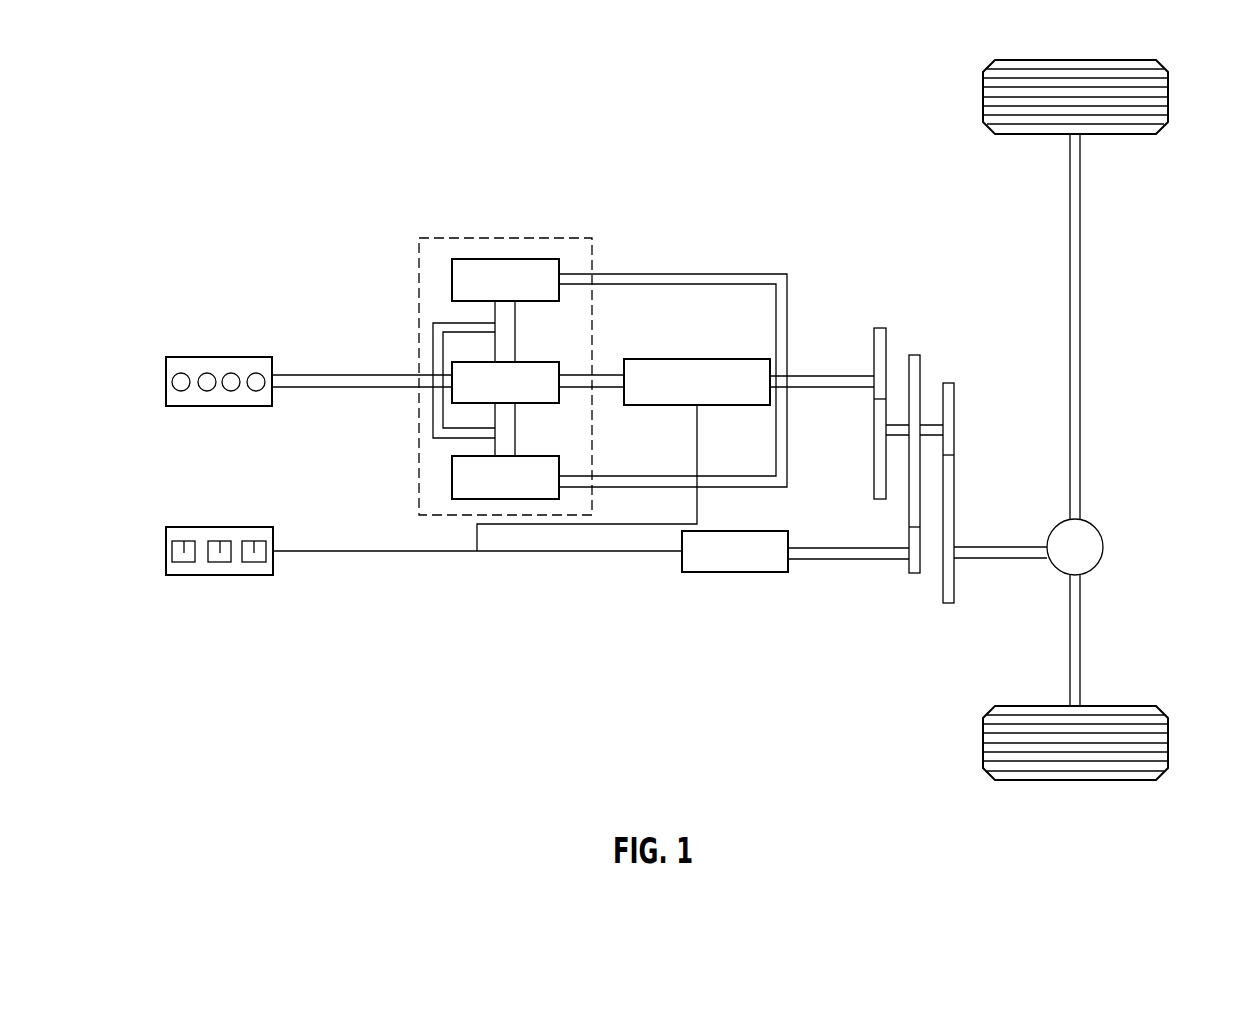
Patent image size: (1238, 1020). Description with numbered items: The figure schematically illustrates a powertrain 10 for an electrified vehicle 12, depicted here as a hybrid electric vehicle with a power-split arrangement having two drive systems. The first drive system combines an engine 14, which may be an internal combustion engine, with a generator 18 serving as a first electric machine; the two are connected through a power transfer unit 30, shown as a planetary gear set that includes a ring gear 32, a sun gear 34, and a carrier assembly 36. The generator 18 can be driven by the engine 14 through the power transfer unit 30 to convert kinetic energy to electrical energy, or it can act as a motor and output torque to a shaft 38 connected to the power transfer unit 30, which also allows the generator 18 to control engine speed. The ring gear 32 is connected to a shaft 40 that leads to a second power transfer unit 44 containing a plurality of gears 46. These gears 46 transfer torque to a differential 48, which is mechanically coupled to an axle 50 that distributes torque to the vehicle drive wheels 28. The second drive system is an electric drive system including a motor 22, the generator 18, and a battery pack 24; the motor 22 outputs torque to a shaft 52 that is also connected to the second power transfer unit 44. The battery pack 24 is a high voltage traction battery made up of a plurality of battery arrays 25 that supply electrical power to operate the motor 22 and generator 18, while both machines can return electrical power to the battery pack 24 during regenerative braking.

The powertrain 10 is at (130, 170).
The electrified vehicle 12 is at (716, 220).
The engine 14 is at (219, 406).
The generator 18 is at (714, 359).
The motor 22 is at (735, 572).
The battery pack 24 is at (166, 551).
The battery arrays 25 is at (271, 592).
The vehicle drive wheels 28 is at (1168, 100).
The power transfer unit 30 is at (488, 236).
The ring gear 32 is at (517, 259).
The sun gear 34 is at (532, 362).
The carrier assembly 36 is at (433, 413).
The shaft 38 is at (606, 375).
The shaft 40 is at (842, 387).
The second power transfer unit 44 is at (954, 411).
The gears 46 is at (880, 328).
The differential 48 is at (1103, 547).
The axle 50 is at (1080, 452).
The shaft 52 is at (841, 559).